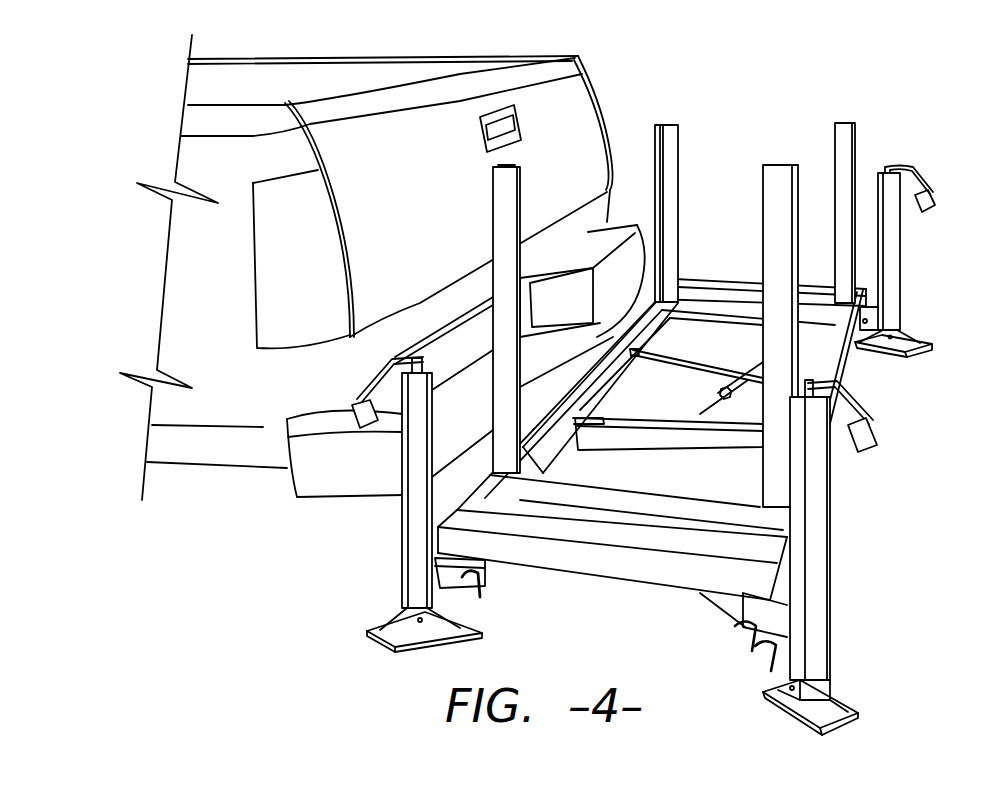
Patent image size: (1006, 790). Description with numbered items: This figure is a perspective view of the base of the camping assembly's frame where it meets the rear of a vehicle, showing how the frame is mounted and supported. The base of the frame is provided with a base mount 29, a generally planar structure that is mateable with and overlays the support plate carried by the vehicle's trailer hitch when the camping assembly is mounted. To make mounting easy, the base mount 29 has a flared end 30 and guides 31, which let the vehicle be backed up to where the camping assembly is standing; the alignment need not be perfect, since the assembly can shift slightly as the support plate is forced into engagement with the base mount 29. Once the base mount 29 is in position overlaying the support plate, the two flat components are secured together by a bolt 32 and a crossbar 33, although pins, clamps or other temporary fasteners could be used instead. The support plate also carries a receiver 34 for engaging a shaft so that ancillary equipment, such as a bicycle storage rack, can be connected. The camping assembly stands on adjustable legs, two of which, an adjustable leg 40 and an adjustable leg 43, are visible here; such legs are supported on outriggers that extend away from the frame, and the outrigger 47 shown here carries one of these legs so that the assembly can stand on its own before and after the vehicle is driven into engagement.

The base mount 29 is at (651, 436).
The flared end 30 is at (597, 398).
The guides 31 is at (675, 360).
The bolt 32 is at (728, 387).
The crossbar 33 is at (713, 403).
The receiver 34 is at (850, 395).
The adjustable leg 40 is at (841, 557).
The adjustable leg 43 is at (400, 535).
The outrigger 47 is at (498, 582).